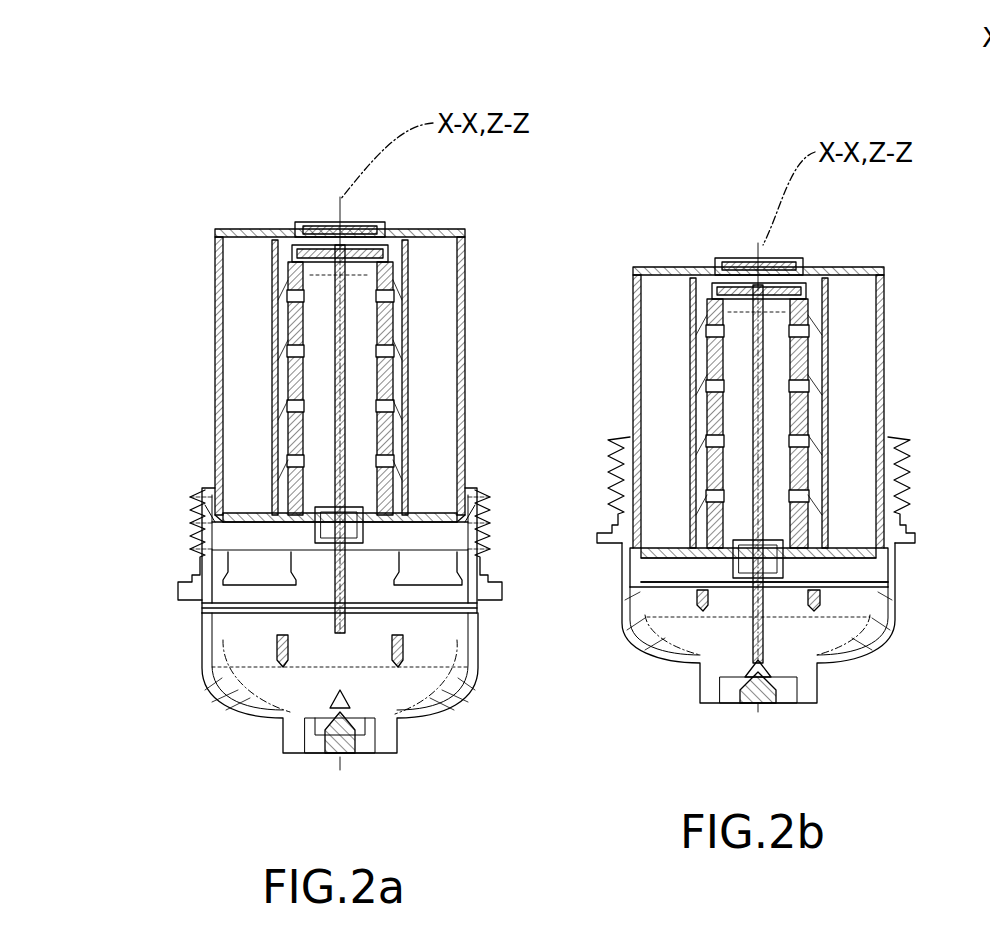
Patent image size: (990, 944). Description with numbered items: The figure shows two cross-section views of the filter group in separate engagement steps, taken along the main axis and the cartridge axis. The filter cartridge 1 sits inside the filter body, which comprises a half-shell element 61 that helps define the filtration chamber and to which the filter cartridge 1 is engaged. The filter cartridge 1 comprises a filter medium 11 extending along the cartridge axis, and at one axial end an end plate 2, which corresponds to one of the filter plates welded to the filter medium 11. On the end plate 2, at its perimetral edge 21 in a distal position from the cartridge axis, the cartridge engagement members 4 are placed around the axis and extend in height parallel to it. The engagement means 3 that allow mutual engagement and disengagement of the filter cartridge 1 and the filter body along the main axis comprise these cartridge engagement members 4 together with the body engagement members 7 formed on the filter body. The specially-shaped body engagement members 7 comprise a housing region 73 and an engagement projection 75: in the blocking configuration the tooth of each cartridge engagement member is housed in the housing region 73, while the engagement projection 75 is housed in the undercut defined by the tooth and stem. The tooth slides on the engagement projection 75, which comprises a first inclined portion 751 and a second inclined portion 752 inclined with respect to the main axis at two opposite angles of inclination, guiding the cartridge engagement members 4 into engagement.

In FIG. 2a, the filter cartridge 1 is at (177, 217).
In FIG. 2b, the filter cartridge 1 is at (595, 318).
In FIG. 2a, the filter medium 11 is at (468, 270).
In FIG. 2b, the filter medium 11 is at (883, 310).
In FIG. 2a, the perimetral edge 21 is at (210, 510).
In FIG. 2a, the half-shell element 61 is at (177, 538).
In FIG. 2b, the half-shell element 61 is at (597, 488).
In FIG. 2a, the end plate 2 is at (467, 530).
In FIG. 2b, the end plate 2 is at (887, 570).
In FIG. 2a, the engagement means 3 is at (438, 617).
In FIG. 2b, the engagement means 3 is at (835, 627).
In FIG. 2a, the cartridge engagement members 4 is at (435, 590).
In FIG. 2a, the body engagement members 7 is at (403, 693).
In FIG. 2b, the body engagement members 7 is at (806, 658).
In FIG. 2a, the housing region 73 is at (243, 660).
In FIG. 2a, the engagement projection 75 is at (297, 660).
In FIG. 2a, the first inclined portion 751 is at (275, 632).
In FIG. 2a, the second inclined portion 752 is at (280, 670).